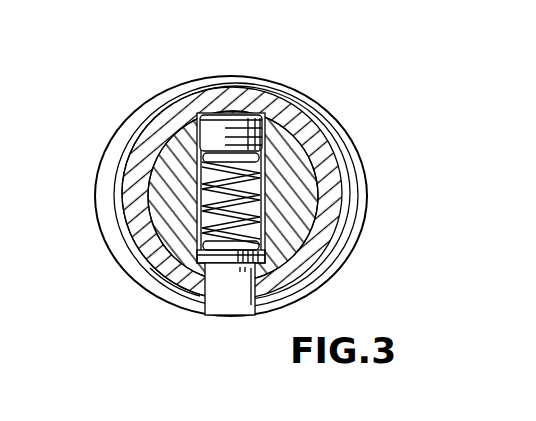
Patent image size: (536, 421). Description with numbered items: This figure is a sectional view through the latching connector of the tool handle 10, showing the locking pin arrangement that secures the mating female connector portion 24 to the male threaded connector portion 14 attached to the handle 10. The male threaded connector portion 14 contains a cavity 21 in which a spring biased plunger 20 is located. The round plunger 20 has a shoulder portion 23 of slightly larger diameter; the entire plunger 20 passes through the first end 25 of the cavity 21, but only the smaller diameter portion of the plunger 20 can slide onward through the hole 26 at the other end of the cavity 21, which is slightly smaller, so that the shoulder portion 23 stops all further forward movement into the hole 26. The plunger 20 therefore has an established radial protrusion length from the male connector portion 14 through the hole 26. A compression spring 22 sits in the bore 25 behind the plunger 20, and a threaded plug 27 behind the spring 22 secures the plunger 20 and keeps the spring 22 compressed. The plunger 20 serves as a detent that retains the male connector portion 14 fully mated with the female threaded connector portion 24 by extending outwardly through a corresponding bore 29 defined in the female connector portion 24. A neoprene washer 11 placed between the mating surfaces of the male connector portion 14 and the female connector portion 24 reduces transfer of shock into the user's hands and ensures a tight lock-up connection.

The handle 10 is at (111, 109).
The neoprene washer 11 is at (337, 128).
The male threaded connector portion 14 is at (160, 180).
The plunger 20 is at (219, 306).
The cavity 21 is at (258, 188).
The compression spring 22 is at (256, 210).
The shoulder portion 23 is at (256, 243).
The female threaded connector portion 24 is at (298, 120).
The first end of the cavity 25 is at (212, 122).
The hole 26 is at (248, 268).
The threaded plug 27 is at (260, 126).
The bore 29 is at (187, 302).